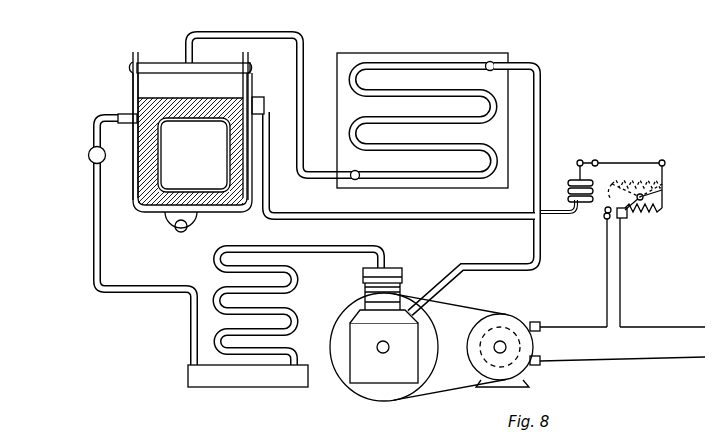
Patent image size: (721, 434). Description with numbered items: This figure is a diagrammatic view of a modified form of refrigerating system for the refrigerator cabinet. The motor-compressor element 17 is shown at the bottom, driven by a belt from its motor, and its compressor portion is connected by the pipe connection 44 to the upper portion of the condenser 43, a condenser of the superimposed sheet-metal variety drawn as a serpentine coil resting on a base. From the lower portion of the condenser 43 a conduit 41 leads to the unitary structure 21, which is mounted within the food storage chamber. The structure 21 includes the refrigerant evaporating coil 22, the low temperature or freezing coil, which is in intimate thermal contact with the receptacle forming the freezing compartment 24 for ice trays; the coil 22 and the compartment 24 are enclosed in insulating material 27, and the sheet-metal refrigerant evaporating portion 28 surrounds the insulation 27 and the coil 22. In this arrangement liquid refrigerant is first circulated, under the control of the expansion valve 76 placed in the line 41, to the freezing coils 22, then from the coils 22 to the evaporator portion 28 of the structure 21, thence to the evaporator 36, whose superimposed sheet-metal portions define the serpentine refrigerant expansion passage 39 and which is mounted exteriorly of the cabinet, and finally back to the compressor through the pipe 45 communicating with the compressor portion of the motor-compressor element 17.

The motor-compressor element 17 is at (445, 303).
The unitary structure 21 is at (140, 212).
The refrigerant evaporating coil 22 is at (153, 170).
The freezing compartment 24 is at (200, 160).
The insulating material 27 is at (226, 102).
The refrigerant evaporating portion 28 is at (130, 80).
The evaporator 36 is at (408, 53).
The refrigerant expansion passage 39 is at (439, 90).
The conduit 41 is at (141, 290).
The condenser 43 is at (297, 312).
The pipe connection 44 is at (357, 249).
The pipe 45 is at (533, 250).
The expansion valve 76 is at (86, 153).